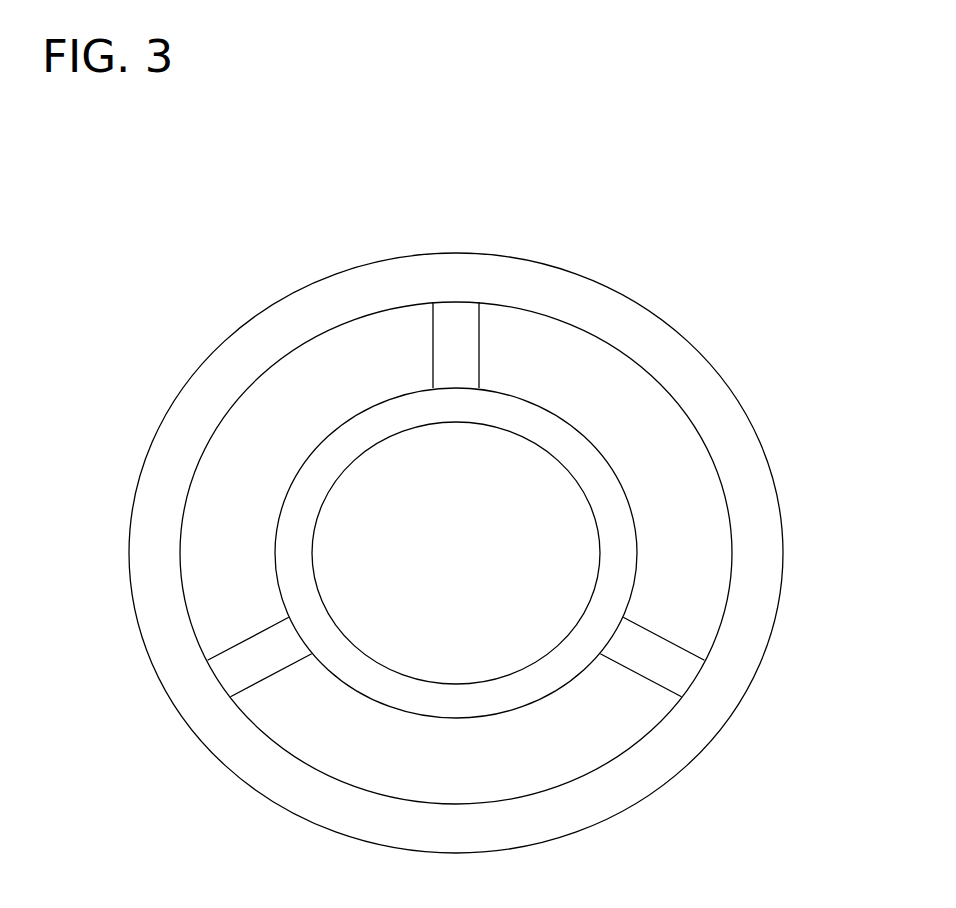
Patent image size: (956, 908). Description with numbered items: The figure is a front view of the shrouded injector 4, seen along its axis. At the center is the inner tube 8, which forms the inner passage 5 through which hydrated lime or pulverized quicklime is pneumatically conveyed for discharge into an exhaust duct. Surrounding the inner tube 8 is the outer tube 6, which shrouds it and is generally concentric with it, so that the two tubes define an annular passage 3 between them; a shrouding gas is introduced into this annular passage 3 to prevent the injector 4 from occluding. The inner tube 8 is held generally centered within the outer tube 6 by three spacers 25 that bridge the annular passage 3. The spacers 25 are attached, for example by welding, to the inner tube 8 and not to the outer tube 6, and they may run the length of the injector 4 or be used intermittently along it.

The annular passage 3 is at (290, 400).
The shrouded injector 4 is at (218, 198).
The inner passage 5 is at (488, 480).
The outer tube 6 is at (680, 333).
The inner tube 8 is at (638, 545).
The spacers 25 is at (448, 335).